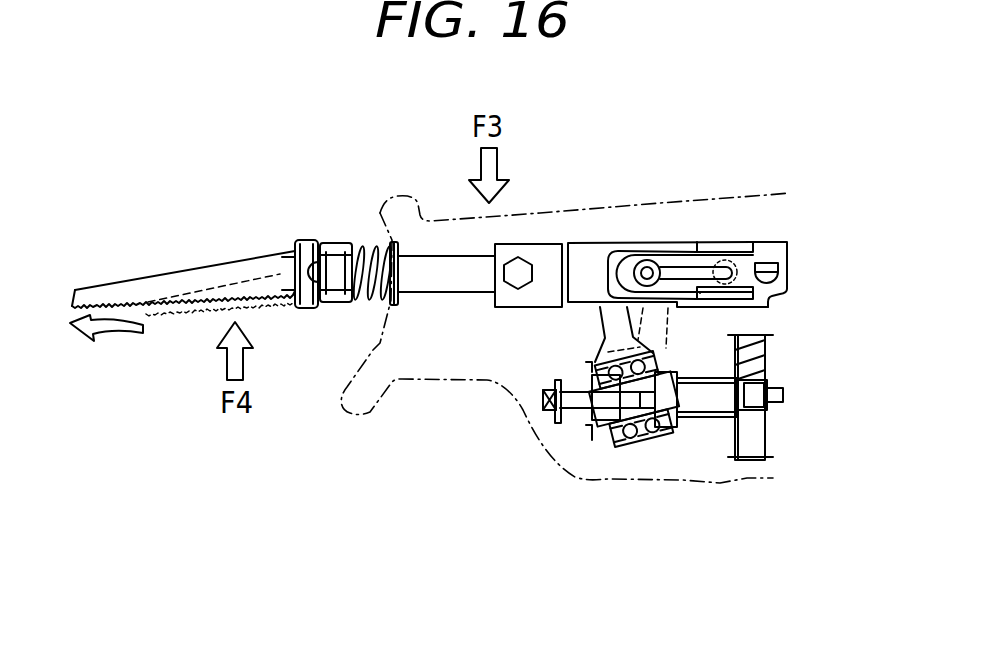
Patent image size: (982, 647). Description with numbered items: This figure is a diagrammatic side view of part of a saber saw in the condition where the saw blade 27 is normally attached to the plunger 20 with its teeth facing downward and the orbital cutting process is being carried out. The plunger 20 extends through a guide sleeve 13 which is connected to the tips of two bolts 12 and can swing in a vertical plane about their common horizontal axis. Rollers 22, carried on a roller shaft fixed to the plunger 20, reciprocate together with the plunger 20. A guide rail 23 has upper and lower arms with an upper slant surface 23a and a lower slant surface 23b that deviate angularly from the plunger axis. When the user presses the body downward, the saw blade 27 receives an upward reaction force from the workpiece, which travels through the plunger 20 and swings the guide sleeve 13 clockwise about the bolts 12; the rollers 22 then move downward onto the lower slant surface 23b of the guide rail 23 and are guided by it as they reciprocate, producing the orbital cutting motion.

The saw blade 27 is at (142, 277).
The plunger 20 is at (443, 290).
The bolts 12 is at (527, 262).
The guide sleeve 13 is at (595, 243).
The rollers 22 is at (647, 260).
The guide rail 23 is at (722, 242).
The upper slant surface 23a is at (687, 255).
The lower slant surface 23b is at (700, 293).